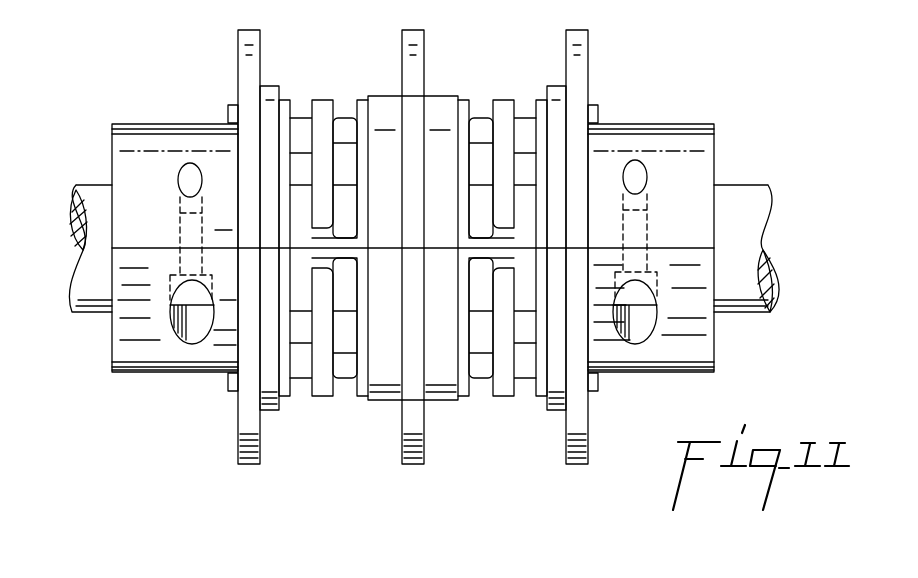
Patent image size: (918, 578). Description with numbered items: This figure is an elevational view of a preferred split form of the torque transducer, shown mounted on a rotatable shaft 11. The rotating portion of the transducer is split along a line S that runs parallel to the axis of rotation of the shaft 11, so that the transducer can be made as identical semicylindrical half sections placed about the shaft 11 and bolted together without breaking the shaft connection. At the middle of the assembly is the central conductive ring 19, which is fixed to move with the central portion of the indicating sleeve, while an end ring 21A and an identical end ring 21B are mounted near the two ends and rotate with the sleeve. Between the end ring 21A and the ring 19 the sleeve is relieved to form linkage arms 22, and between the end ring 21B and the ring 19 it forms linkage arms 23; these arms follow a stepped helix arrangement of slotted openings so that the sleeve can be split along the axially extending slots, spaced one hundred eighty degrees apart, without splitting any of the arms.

The rotatable shaft 11 is at (84, 191).
The split line S is at (126, 248).
The central conductive ring 19 is at (428, 52).
The end ring 21A is at (262, 50).
The end ring 21B is at (590, 58).
The linkage arms 22 is at (327, 140).
The linkage arms 23 is at (498, 143).